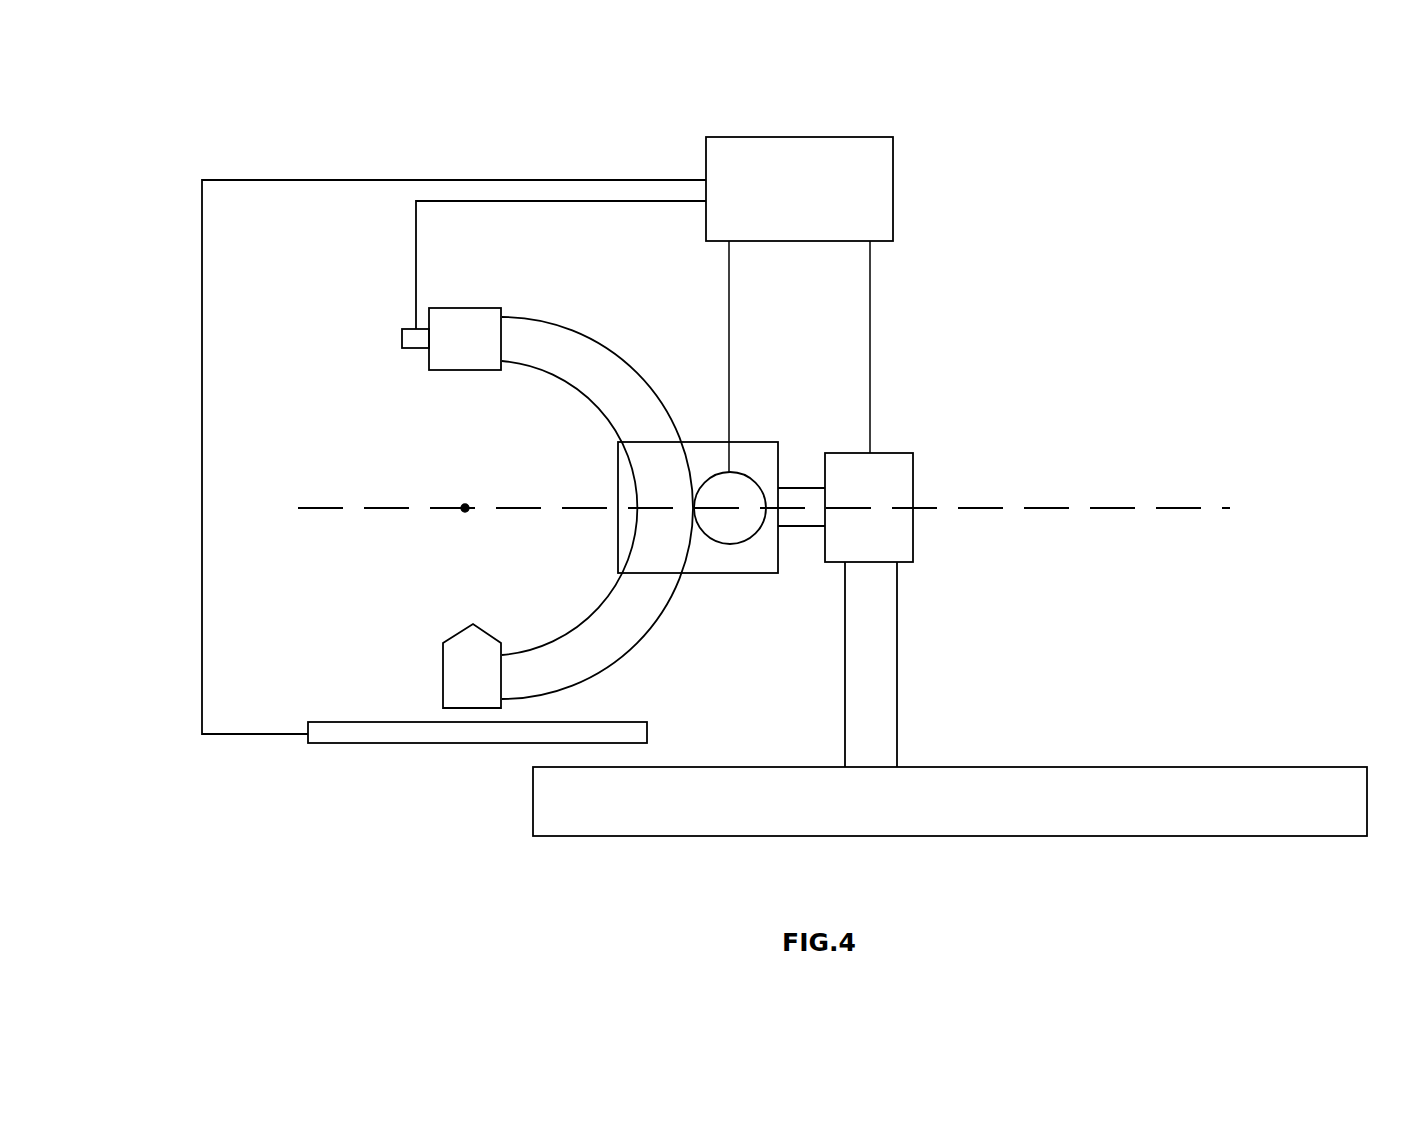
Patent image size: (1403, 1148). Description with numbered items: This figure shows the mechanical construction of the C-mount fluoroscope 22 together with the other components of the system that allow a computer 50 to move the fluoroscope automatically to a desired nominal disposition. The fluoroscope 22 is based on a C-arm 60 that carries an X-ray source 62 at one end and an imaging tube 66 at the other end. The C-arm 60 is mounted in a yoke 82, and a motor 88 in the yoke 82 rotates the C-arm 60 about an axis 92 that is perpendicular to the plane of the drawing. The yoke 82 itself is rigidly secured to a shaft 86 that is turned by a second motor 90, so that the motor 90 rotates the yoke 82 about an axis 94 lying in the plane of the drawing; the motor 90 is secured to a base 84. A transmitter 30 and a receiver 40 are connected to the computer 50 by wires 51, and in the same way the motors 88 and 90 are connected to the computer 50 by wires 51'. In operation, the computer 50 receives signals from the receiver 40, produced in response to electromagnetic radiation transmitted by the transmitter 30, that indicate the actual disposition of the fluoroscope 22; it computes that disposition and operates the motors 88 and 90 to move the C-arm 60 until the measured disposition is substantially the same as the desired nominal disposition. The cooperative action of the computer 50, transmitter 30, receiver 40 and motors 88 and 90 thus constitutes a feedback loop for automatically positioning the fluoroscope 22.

The C-mount fluoroscope 22 is at (1032, 317).
The transmitter 30 is at (647, 732).
The receiver 40 is at (415, 350).
The computer 50 is at (788, 216).
The wires 51 is at (454, 433).
The wires 51' is at (838, 356).
The C-arm 60 is at (601, 395).
The X-ray source 62 is at (461, 689).
The imaging tube 66 is at (453, 351).
The yoke 82 is at (762, 442).
The base 84 is at (858, 809).
The shaft 86 is at (802, 517).
The motor 88 is at (718, 536).
The motor 90 is at (858, 548).
The axis 92 is at (466, 504).
The axis 94 is at (380, 511).